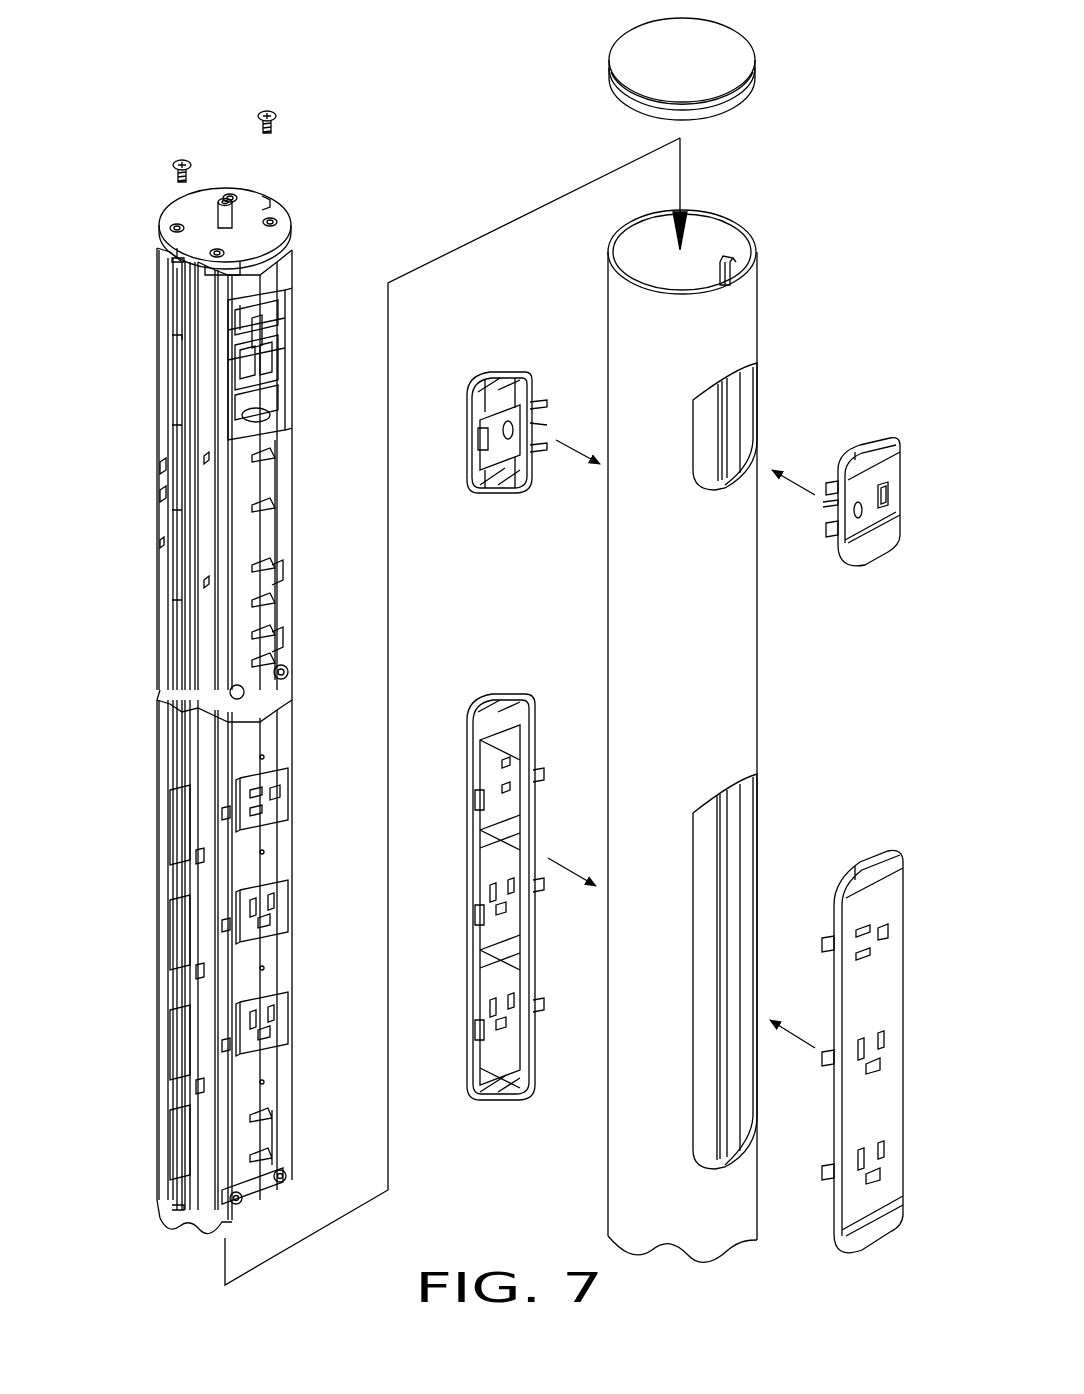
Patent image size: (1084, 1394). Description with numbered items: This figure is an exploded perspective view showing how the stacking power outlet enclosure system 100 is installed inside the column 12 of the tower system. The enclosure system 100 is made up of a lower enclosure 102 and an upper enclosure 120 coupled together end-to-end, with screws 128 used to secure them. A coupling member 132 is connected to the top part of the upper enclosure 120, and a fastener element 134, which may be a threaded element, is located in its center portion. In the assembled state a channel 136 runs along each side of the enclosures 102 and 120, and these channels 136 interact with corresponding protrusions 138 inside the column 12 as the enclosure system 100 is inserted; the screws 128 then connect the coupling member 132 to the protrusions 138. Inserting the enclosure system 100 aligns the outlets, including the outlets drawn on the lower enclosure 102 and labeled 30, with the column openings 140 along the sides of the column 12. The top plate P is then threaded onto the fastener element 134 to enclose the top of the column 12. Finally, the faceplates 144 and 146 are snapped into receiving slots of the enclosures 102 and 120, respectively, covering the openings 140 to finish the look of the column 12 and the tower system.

The stacking power outlet enclosure system 100 is at (122, 152).
The enclosure 102 is at (146, 932).
The enclosure 120 is at (146, 517).
The screws 128 is at (258, 112).
The coupling member 132 is at (291, 216).
The fastener element 134 is at (235, 212).
The channel 136 is at (179, 230).
The protrusions 138 is at (725, 262).
The column openings 140 is at (778, 400).
The faceplate 144 is at (486, 700).
The faceplate 146 is at (485, 495).
The receptacle 30 is at (282, 815).
The column 12 is at (762, 650).
The top plate P is at (745, 60).